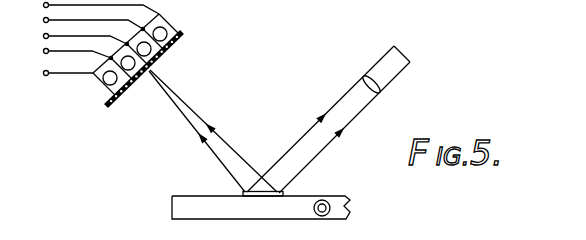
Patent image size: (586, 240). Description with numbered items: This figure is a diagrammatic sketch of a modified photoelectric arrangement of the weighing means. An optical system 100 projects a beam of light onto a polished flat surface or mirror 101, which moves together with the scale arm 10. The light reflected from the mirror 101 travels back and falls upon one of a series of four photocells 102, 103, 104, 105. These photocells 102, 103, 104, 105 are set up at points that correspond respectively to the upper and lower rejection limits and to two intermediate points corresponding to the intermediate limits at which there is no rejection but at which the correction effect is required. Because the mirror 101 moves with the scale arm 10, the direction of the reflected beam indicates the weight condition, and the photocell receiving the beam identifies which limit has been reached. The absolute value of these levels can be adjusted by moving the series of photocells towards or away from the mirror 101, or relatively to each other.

The scale arm 10 is at (182, 204).
The optical system 100 is at (387, 77).
The polished flat surface or mirror 101 is at (284, 193).
The photocell 102 is at (164, 31).
The photocell 103 is at (109, 86).
The photocell 104 is at (170, 50).
The photocell 105 is at (131, 88).